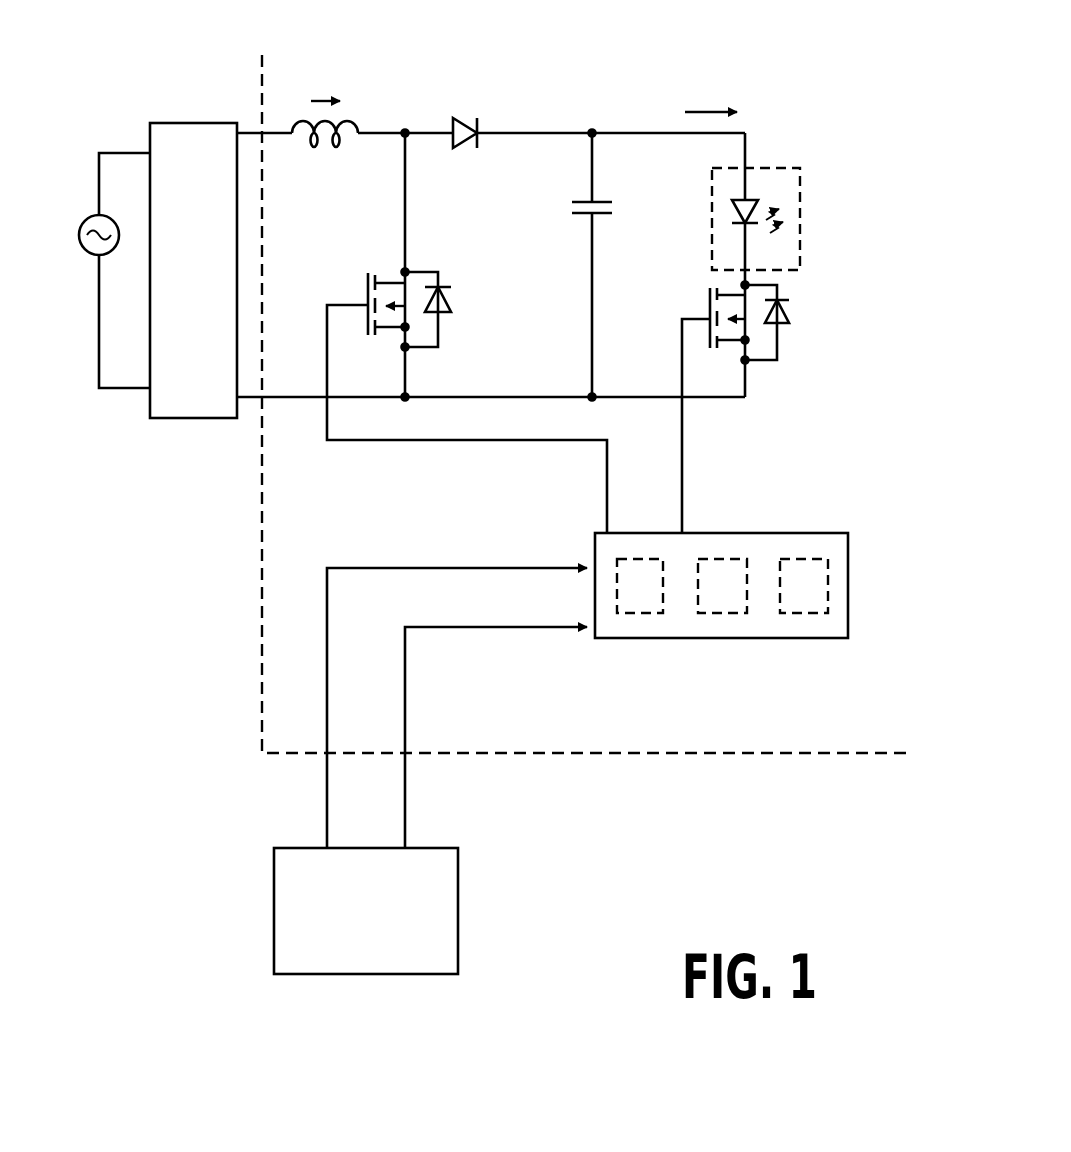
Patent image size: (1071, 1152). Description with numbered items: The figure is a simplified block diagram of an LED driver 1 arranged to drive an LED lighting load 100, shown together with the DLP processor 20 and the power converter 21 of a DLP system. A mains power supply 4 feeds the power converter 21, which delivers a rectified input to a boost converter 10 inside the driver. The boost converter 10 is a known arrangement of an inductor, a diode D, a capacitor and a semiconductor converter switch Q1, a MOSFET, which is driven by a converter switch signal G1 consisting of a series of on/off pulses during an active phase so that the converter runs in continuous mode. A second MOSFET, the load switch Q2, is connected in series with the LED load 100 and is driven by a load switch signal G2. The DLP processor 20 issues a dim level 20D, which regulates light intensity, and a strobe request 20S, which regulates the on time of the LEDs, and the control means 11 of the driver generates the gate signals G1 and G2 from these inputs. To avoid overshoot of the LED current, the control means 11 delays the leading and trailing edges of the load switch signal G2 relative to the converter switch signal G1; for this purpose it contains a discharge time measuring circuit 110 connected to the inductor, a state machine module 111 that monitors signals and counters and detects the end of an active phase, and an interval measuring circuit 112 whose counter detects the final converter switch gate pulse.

The LED driver 1 is at (856, 460).
The mains power supply 4 is at (90, 222).
The power converter 21 is at (173, 123).
The boost converter 10 is at (585, 58).
The diode D is at (462, 145).
The converter switch Q1 is at (423, 253).
The converter switch signal G1 is at (350, 305).
The LED lighting load 100 is at (783, 167).
The load switch Q2 is at (760, 362).
The load switch signal G2 is at (682, 493).
The control means 11 is at (707, 638).
The discharge time measuring circuit 110 is at (652, 613).
The state machine module 111 is at (747, 593).
The interval measuring circuit 112 is at (830, 593).
The dim level 20D is at (437, 568).
The strobe request 20S is at (472, 627).
The DLP processor 20 is at (458, 910).